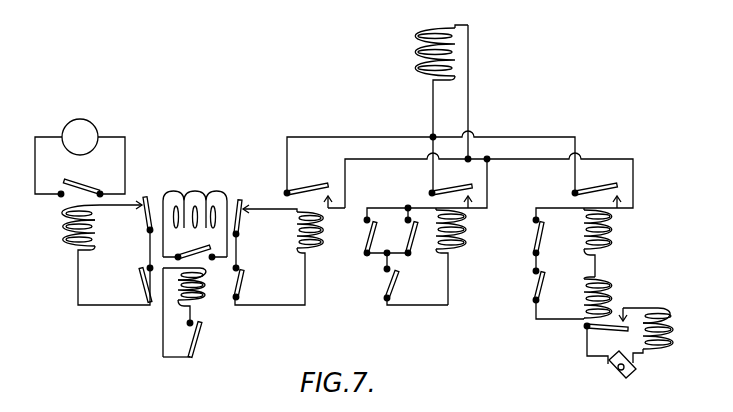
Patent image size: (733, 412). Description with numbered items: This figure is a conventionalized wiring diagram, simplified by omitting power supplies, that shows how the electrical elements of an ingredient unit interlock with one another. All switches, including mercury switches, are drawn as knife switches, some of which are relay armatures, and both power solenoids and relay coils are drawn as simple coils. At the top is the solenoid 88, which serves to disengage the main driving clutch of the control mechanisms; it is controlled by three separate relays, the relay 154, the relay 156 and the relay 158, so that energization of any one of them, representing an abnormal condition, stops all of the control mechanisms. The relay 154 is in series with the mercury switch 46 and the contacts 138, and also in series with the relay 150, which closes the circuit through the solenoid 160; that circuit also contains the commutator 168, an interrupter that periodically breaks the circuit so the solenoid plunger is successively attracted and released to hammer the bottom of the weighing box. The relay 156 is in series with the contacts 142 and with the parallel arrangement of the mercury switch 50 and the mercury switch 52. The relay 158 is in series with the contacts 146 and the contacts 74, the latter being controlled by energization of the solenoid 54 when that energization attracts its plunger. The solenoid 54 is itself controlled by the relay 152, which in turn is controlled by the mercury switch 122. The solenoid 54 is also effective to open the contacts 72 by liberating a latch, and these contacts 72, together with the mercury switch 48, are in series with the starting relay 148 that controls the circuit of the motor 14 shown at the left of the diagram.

The motor 14 is at (75, 121).
The starting relay 148 is at (63, 222).
The contacts 72 is at (147, 196).
The mercury switch 48 is at (140, 282).
The solenoid 54 is at (203, 192).
The contacts 74 is at (241, 198).
The relay 152 is at (203, 292).
The mercury switch 122 is at (198, 348).
The relay 158 is at (297, 236).
The contacts 146 is at (241, 286).
The solenoid 88 is at (416, 52).
The mercury switch 50 is at (371, 236).
The mercury switch 52 is at (411, 236).
The contacts 142 is at (394, 286).
The relay 156 is at (464, 236).
The mercury switch 46 is at (540, 236).
The relay 154 is at (611, 236).
The contacts 138 is at (540, 286).
The relay 150 is at (612, 290).
The solenoid 160 is at (673, 330).
The commutator 168 is at (628, 374).